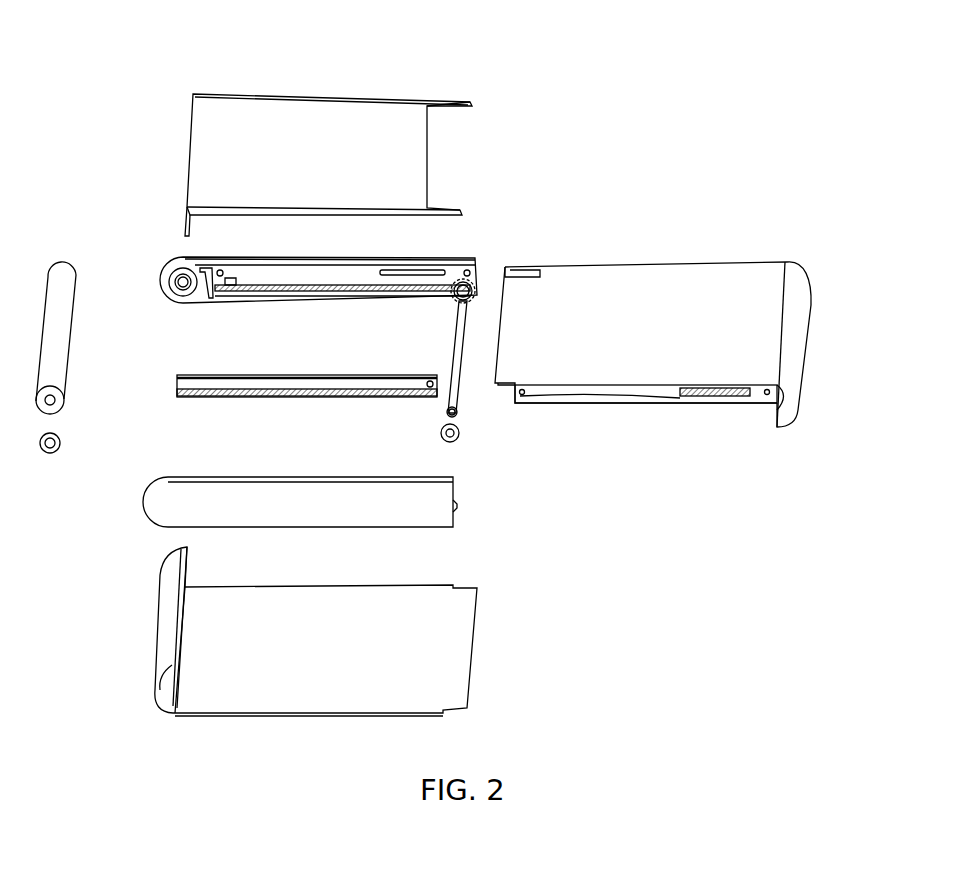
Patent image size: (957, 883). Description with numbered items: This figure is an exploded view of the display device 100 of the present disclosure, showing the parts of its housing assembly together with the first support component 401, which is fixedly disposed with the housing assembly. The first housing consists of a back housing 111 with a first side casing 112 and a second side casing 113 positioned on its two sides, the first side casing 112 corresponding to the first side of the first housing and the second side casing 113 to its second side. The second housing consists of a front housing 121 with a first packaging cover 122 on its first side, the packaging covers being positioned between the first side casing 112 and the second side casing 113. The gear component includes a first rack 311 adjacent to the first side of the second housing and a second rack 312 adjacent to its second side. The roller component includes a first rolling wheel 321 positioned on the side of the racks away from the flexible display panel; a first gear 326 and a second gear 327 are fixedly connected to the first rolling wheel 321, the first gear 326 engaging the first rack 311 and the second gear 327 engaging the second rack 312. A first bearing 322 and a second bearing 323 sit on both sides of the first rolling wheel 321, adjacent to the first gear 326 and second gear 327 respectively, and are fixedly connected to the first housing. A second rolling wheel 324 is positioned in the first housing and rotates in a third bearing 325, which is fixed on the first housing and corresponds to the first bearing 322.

The display device 100 is at (126, 48).
The first support component 401 is at (190, 149).
The second side casing 113 is at (165, 268).
The second rack 312 is at (303, 292).
The second gear 327 is at (476, 281).
The second bearing 323 is at (463, 291).
The first rolling wheel 321 is at (453, 340).
The first gear 326 is at (448, 412).
The first bearing 322 is at (460, 436).
The first rack 311 is at (177, 388).
The second rolling wheel 324 is at (72, 326).
The third bearing 325 is at (62, 440).
The front housing 121 is at (798, 322).
The first packaging cover 122 is at (667, 390).
The first side casing 112 is at (160, 510).
The back housing 111 is at (165, 634).